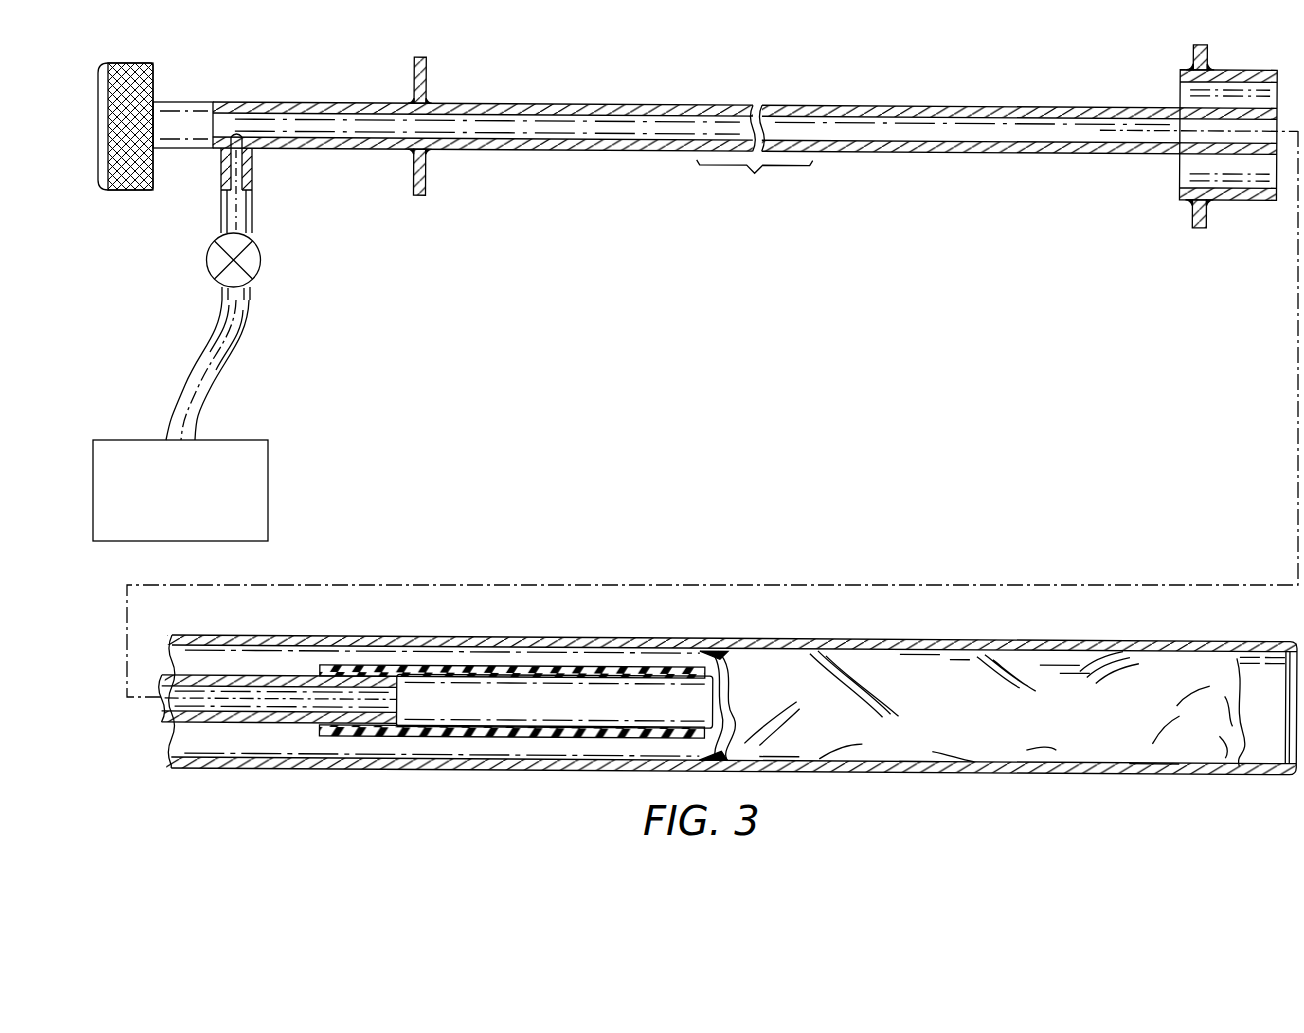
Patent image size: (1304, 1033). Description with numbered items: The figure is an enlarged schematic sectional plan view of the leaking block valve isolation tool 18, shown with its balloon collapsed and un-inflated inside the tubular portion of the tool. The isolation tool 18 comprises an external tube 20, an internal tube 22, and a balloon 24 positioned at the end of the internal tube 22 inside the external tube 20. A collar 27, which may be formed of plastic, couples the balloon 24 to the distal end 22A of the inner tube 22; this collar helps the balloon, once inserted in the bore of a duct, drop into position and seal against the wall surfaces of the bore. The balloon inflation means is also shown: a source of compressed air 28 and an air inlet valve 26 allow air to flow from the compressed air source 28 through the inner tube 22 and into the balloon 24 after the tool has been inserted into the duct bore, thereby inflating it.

The leaking block valve isolation tool 18 is at (452, 330).
The external tube 20 is at (1245, 200).
The internal tube 22 is at (560, 150).
The distal end of inner tube 22A is at (330, 735).
The balloon 24 is at (975, 677).
The air inlet valve 26 is at (262, 258).
The collar 27 is at (560, 672).
The source of compressed air 28 is at (268, 476).